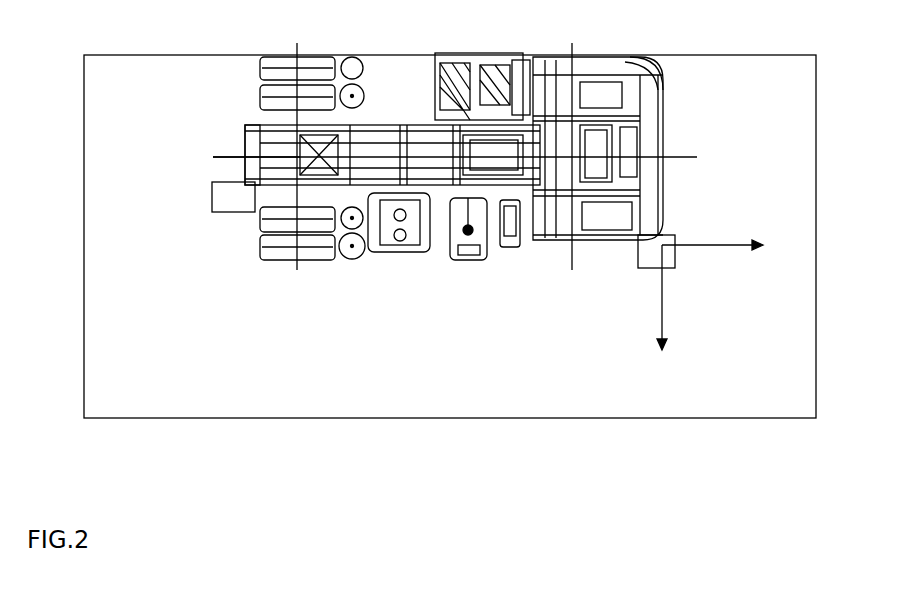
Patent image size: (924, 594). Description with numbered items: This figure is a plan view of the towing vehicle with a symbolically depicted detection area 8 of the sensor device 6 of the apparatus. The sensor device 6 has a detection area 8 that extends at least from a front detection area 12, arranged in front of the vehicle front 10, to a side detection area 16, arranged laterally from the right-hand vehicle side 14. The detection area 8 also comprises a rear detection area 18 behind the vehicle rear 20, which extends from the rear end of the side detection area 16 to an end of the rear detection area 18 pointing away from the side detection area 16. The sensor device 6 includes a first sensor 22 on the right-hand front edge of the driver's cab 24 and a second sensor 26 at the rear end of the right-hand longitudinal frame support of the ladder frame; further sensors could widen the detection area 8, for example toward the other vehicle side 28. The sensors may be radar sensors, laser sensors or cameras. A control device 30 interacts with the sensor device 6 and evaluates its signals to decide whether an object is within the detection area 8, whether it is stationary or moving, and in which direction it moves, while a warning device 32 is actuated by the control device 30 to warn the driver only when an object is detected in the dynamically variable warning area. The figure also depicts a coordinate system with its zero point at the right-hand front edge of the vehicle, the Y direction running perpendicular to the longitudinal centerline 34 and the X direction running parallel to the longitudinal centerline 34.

The sensor device 6 is at (615, 218).
The detection area 8 is at (430, 387).
The vehicle front 10 is at (652, 118).
The front detection area 12 is at (738, 164).
The right-hand vehicle side 14 is at (457, 262).
The side detection area 16 is at (442, 357).
The rear detection area 18 is at (112, 177).
The vehicle rear 20 is at (248, 140).
The first sensor 22 is at (670, 262).
The driver's cab 24 is at (663, 53).
The second sensor 26 is at (232, 197).
The other vehicle side 28 is at (457, 62).
The control device 30 is at (597, 93).
The warning device 32 is at (628, 147).
The longitudinal centerline 34 is at (220, 160).